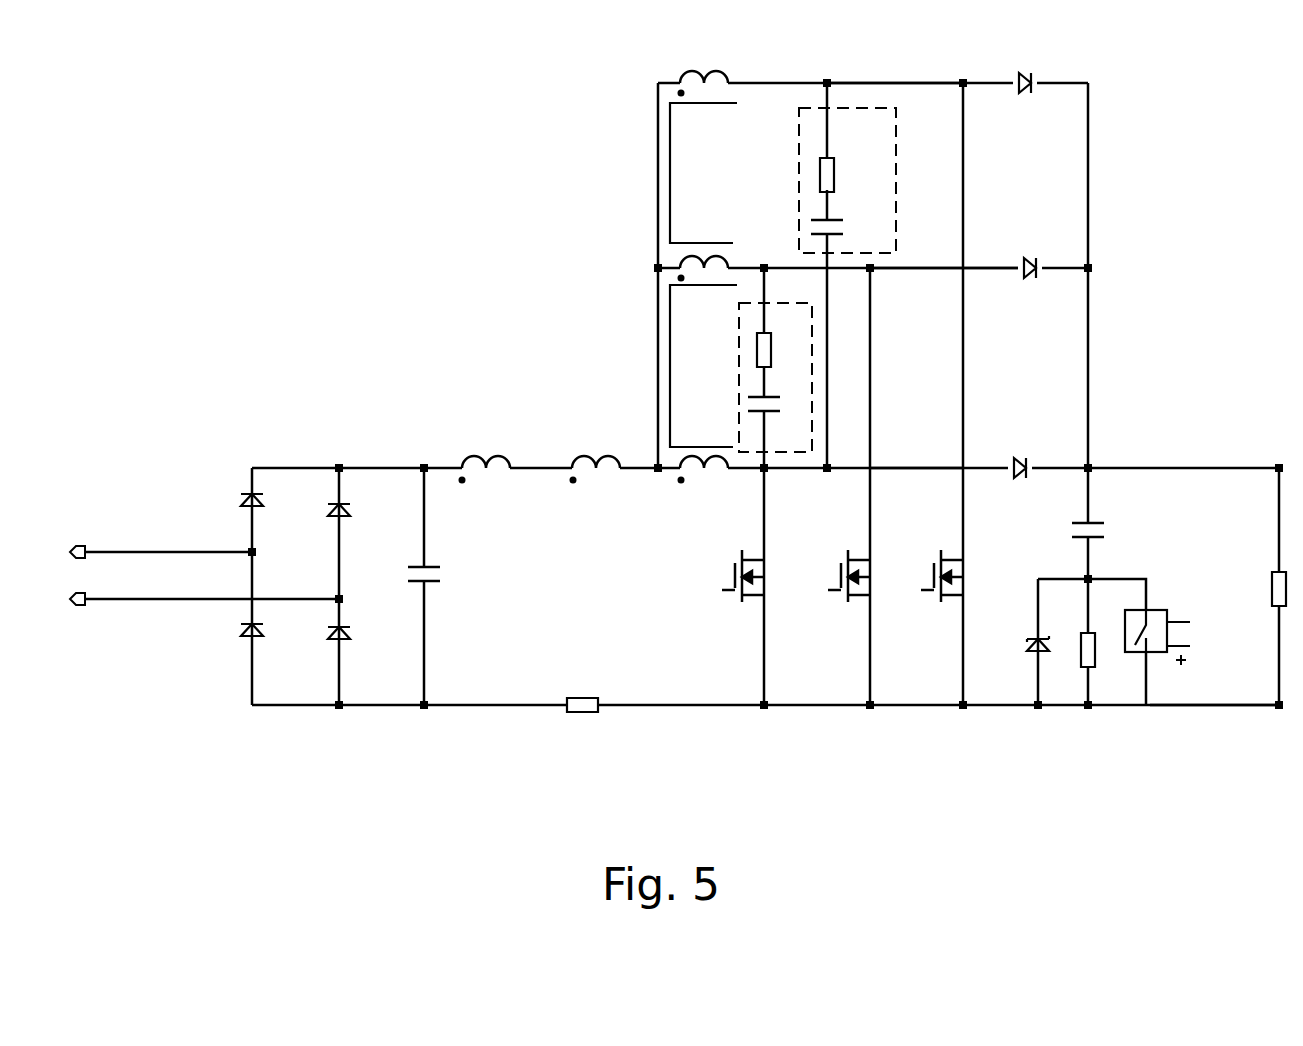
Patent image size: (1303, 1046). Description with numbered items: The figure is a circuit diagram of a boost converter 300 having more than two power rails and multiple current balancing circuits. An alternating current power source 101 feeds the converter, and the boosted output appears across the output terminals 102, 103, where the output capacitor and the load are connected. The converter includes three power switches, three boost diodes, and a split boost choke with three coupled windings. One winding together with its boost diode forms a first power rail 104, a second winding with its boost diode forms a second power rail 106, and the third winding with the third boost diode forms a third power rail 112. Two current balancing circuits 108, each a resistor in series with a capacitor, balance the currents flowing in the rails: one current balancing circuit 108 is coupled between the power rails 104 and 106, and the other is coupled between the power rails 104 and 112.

The boost converter 300 is at (390, 131).
The alternating current power source 101 is at (62, 578).
The output terminal 102 is at (1279, 464).
The output terminal 103 is at (1279, 709).
The first power rail 104 is at (908, 470).
The second power rail 106 is at (958, 272).
The current balancing circuit 108 is at (797, 138).
The third power rail 112 is at (857, 83).